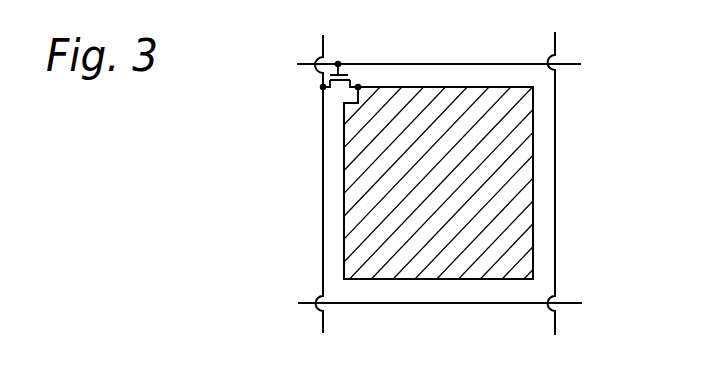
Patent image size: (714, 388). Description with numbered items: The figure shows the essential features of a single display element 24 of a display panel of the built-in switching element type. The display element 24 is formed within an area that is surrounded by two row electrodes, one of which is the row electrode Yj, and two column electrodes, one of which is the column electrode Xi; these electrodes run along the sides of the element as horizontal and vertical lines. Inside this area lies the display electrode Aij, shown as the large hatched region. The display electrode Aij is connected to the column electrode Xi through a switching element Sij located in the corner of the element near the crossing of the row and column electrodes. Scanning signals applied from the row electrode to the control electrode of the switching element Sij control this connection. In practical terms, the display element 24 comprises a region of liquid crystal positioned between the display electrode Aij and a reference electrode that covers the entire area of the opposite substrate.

The display element 24 is at (441, 183).
The display electrode Aij is at (522, 172).
The switching element Sij is at (352, 78).
The column electrode Xi is at (323, 48).
The row electrode Yj is at (305, 64).